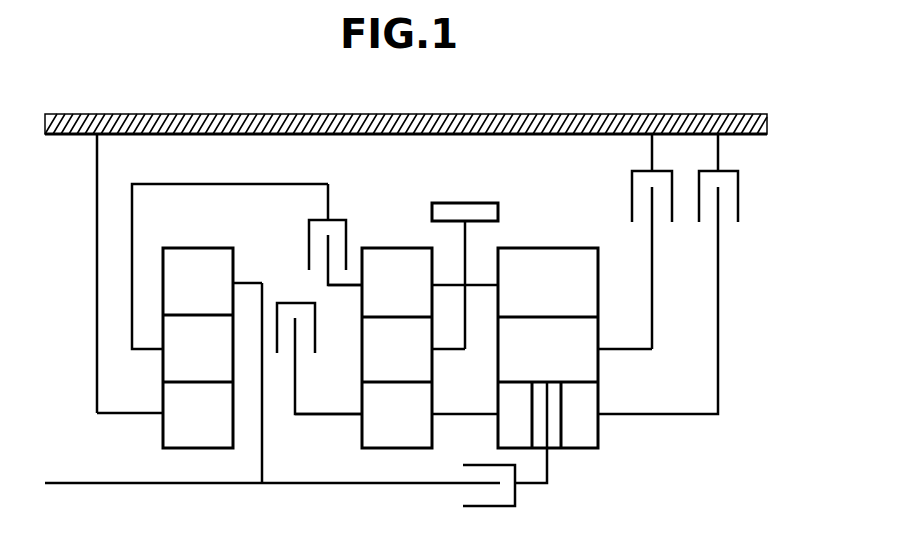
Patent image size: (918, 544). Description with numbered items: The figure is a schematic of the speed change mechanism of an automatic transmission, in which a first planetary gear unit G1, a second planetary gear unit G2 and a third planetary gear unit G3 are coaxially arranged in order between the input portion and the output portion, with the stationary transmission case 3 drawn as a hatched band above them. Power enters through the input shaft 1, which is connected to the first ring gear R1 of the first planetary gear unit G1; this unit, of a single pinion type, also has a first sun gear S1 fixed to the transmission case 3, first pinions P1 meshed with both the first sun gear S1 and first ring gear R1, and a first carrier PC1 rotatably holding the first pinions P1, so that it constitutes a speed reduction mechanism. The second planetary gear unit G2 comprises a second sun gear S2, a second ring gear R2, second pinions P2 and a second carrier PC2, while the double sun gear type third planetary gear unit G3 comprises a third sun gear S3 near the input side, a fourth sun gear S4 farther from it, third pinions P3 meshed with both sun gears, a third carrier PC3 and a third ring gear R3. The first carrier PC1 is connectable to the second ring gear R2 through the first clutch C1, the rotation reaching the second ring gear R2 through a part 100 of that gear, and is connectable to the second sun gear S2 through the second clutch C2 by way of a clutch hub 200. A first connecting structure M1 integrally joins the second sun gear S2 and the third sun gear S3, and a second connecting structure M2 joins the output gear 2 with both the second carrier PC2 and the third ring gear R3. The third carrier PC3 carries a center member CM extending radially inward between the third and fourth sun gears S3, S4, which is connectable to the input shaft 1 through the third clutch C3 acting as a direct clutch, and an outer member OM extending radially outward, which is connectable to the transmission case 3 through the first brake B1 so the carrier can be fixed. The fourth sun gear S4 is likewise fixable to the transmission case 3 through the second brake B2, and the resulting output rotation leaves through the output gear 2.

The input shaft 1 is at (112, 485).
The output gear 2 is at (500, 212).
The transmission case 3 is at (437, 131).
The part of the second ring gear 100 is at (338, 288).
The clutch hub 200 is at (318, 416).
The first planetary gear unit G1 is at (184, 242).
The second planetary gear unit G2 is at (383, 242).
The third planetary gear unit G3 is at (534, 242).
The first ring gear R1 is at (224, 378).
The first pinions P1 is at (198, 348).
The first sun gear S1 is at (198, 415).
The second ring gear R2 is at (397, 282).
The second pinions P2 is at (397, 349).
The second sun gear S2 is at (397, 415).
The third ring gear R3 is at (548, 282).
The third pinions P3 is at (548, 349).
The third sun gear S3 is at (515, 415).
The fourth sun gear S4 is at (579, 415).
The first clutch C1 is at (336, 234).
The second clutch C2 is at (319, 358).
The third clutch C3 is at (504, 494).
The first brake B1 is at (656, 178).
The second brake B2 is at (673, 274).
The first carrier PC1 is at (140, 350).
The second carrier PC2 is at (450, 351).
The third carrier PC3 is at (621, 346).
The first connecting structure M1 is at (460, 416).
The second connecting structure M2 is at (462, 324).
The center member CM is at (549, 470).
The outer member OM is at (653, 300).